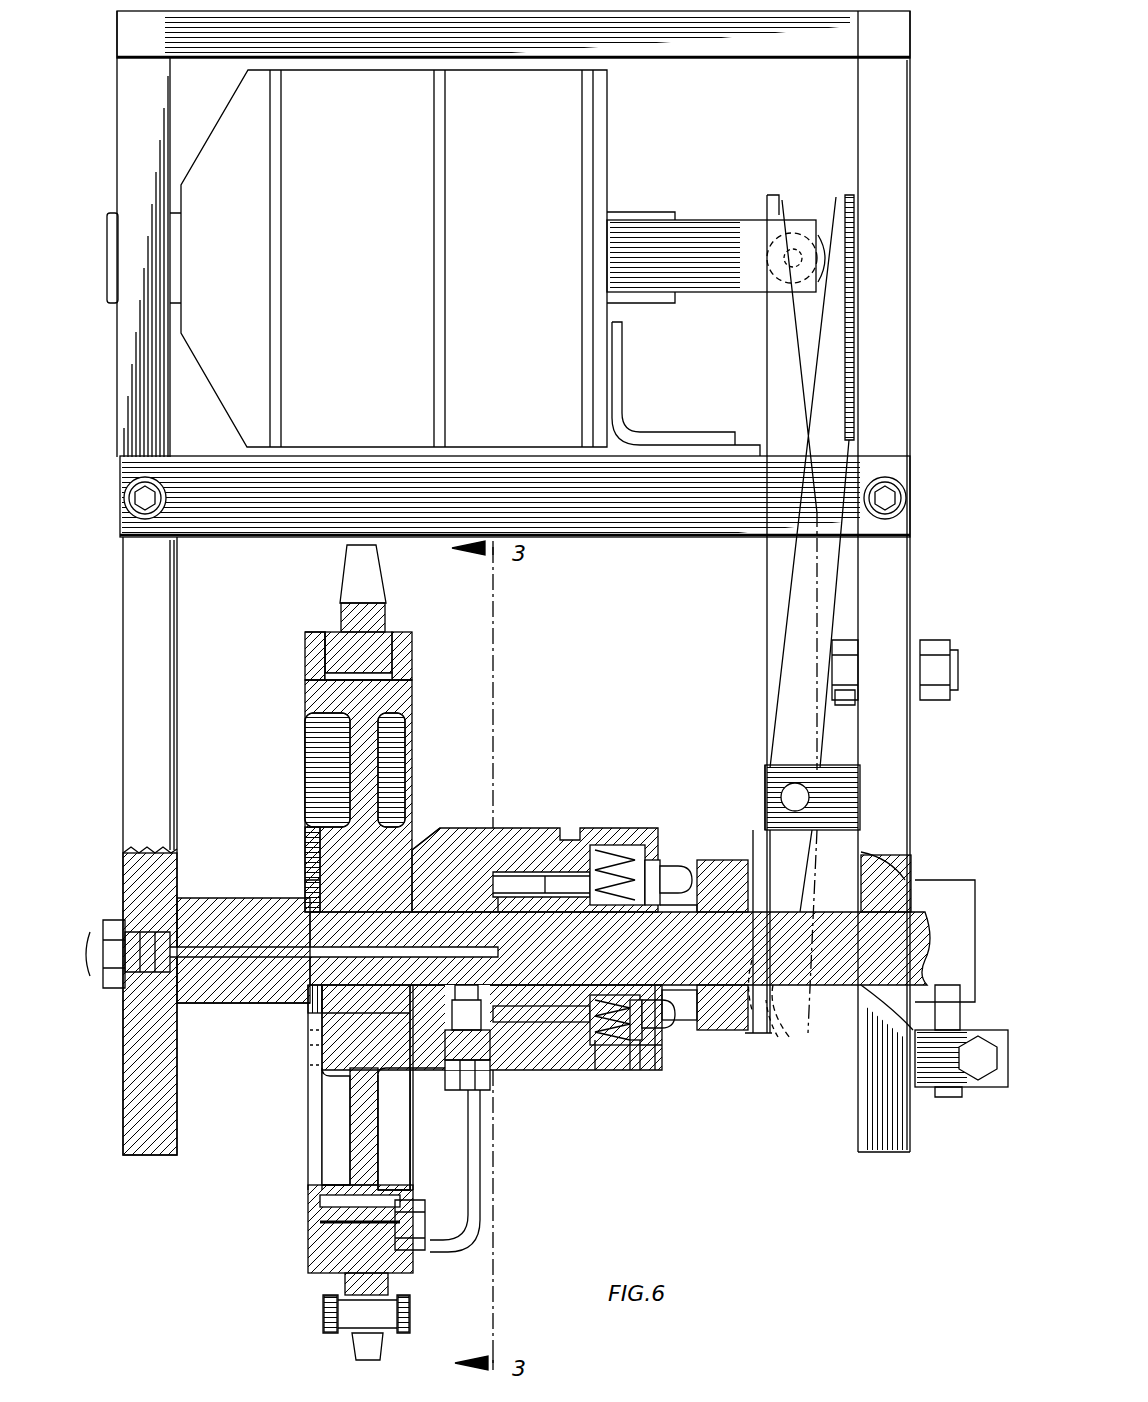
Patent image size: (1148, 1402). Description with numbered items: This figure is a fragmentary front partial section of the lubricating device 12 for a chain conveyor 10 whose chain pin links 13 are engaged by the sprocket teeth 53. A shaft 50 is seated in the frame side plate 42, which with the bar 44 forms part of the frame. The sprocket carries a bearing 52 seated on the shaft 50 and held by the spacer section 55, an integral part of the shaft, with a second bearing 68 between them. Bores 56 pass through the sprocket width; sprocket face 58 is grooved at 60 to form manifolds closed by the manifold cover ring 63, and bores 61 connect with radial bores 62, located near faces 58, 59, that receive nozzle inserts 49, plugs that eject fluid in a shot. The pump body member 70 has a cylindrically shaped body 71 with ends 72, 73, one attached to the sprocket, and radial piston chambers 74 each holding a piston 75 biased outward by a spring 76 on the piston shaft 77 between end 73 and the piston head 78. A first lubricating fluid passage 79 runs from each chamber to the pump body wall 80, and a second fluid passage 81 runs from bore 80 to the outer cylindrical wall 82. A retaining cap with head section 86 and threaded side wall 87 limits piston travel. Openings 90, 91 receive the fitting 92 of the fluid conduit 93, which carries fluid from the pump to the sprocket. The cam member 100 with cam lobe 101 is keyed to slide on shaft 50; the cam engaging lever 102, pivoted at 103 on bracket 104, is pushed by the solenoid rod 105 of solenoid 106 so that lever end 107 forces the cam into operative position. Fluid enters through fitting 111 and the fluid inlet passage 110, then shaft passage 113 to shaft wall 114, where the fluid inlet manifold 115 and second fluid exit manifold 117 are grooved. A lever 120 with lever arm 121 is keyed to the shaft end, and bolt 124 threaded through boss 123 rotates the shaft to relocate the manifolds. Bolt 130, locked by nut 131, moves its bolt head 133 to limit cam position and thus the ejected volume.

The chain conveyor 10 is at (325, 1310).
The lubricating device 12 is at (910, 122).
The chain pin link 13 is at (122, 416).
The frame side plate 42 is at (912, 192).
The bar 44 is at (872, 458).
The nozzle insert 49 is at (330, 632).
The shaft 50 is at (835, 965).
The bearing 52 is at (308, 832).
The sprocket tooth 53 is at (350, 558).
The spacer section 55 is at (200, 1005).
The bore 56 is at (340, 1195).
The sprocket face 58 is at (307, 712).
The sprocket face 59 is at (412, 1210).
The groove 60 is at (308, 685).
The bore 61 is at (400, 675).
The bore 62 is at (315, 640).
The manifold cover ring 63 is at (305, 652).
The second bearing 68 is at (305, 880).
The pump body member 70 is at (528, 828).
The cylindrically shaped body 71 is at (548, 868).
The pump body end 72 is at (425, 848).
The pump body end 73 is at (612, 845).
The piston chamber 74 is at (505, 872).
The piston 75 is at (575, 876).
The spring 76 is at (640, 860).
The piston shaft 77 is at (652, 860).
The piston head 78 is at (676, 878).
The first lubricating fluid passage 79 is at (494, 876).
The pump body wall 80 is at (468, 880).
The second fluid passage 81 is at (400, 1060).
The outer cylindrical wall 82 is at (548, 1070).
The head section 86 is at (662, 1060).
The threaded side wall 87 is at (655, 1070).
The opening 90 is at (455, 1050).
The opening 91 is at (392, 1195).
The fitting 92 is at (398, 1100).
The fluid conduit 93 is at (480, 1160).
The cam member 100 is at (705, 860).
The cam lobe 101 is at (735, 1032).
The cam engaging lever 102 is at (790, 615).
The pivot 103 is at (800, 797).
The bracket 104 is at (765, 765).
The solenoid rod 105 is at (712, 222).
The solenoid 106 is at (565, 135).
The lever end 107 is at (790, 1033).
The fluid inlet passage 110 is at (200, 940).
The fitting 111 is at (125, 925).
The shaft passage 113 is at (596, 1060).
The shaft wall 114 is at (265, 1005).
The fluid inlet manifold 115 is at (630, 1062).
The second fluid exit manifold 117 is at (495, 1092).
The lever 120 is at (962, 880).
The lever arm 121 is at (960, 1008).
The threaded boss 123 is at (948, 1097).
The bolt 124 is at (985, 1090).
The bolt 130 is at (860, 660).
The nut 131 is at (935, 655).
The bolt head 133 is at (848, 700).